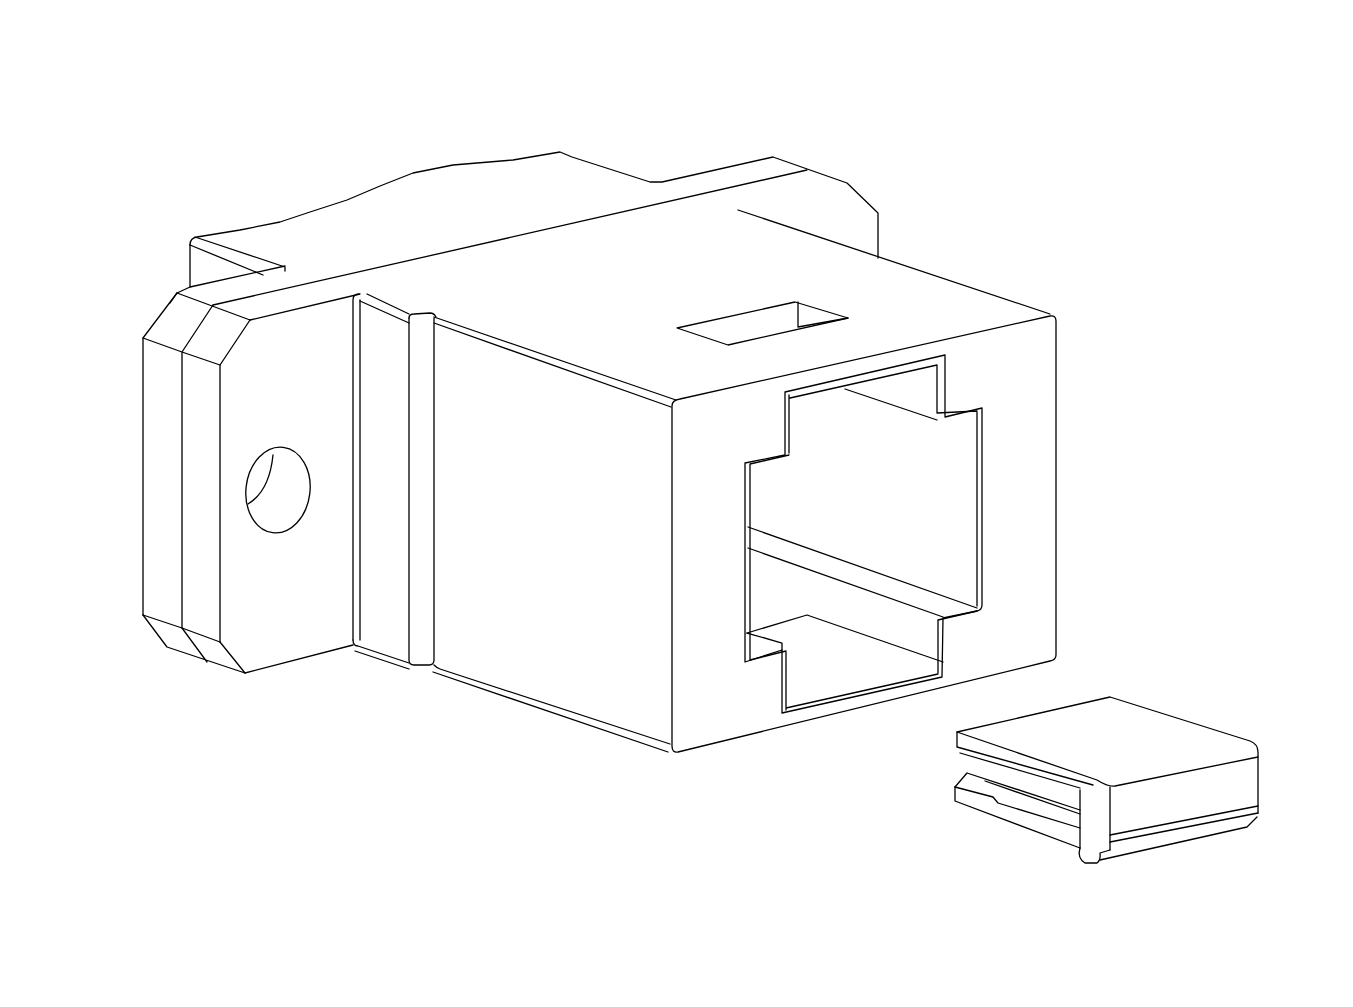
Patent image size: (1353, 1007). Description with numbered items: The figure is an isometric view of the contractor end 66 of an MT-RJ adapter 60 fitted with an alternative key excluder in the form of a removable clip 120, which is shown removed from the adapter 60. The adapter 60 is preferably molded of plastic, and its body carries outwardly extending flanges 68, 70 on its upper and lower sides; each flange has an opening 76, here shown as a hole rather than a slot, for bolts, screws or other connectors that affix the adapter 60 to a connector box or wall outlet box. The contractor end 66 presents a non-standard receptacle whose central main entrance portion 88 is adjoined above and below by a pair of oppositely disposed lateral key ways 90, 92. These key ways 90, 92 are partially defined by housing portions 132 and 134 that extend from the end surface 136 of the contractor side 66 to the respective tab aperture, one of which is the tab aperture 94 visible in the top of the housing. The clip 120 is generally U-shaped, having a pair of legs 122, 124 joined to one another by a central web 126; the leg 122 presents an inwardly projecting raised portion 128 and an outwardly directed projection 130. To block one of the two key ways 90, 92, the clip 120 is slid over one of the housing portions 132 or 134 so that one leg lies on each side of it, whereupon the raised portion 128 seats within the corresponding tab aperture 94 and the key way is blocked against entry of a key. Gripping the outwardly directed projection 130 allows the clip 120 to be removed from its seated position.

The adapter 60 is at (1041, 180).
The contractor end 66 is at (1102, 458).
The flange 68 is at (845, 217).
The flange 70 is at (311, 613).
The opening 76 is at (258, 492).
The main entrance portion 88 is at (770, 578).
The first key way 90 is at (918, 393).
The second key way 92 is at (797, 658).
The first tab aperture 94 is at (790, 318).
The removable clip 120 is at (1212, 698).
The leg 122 is at (1017, 817).
The leg 124 is at (1113, 713).
The central web 126 is at (1148, 813).
The inwardly projecting raised portion 128 is at (995, 783).
The outwardly directed projection 130 is at (1087, 857).
The housing portion 132 is at (850, 343).
The housing portion 134 is at (883, 652).
The end surface 136 is at (1032, 343).